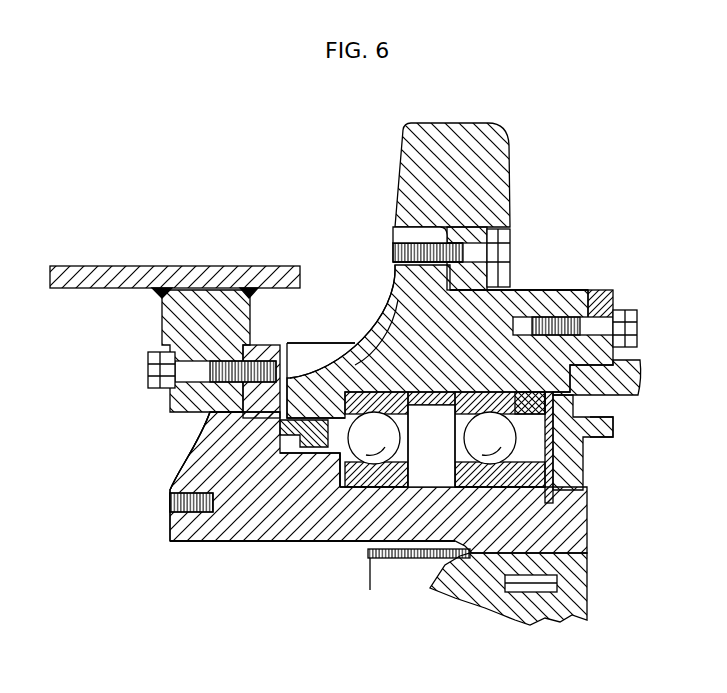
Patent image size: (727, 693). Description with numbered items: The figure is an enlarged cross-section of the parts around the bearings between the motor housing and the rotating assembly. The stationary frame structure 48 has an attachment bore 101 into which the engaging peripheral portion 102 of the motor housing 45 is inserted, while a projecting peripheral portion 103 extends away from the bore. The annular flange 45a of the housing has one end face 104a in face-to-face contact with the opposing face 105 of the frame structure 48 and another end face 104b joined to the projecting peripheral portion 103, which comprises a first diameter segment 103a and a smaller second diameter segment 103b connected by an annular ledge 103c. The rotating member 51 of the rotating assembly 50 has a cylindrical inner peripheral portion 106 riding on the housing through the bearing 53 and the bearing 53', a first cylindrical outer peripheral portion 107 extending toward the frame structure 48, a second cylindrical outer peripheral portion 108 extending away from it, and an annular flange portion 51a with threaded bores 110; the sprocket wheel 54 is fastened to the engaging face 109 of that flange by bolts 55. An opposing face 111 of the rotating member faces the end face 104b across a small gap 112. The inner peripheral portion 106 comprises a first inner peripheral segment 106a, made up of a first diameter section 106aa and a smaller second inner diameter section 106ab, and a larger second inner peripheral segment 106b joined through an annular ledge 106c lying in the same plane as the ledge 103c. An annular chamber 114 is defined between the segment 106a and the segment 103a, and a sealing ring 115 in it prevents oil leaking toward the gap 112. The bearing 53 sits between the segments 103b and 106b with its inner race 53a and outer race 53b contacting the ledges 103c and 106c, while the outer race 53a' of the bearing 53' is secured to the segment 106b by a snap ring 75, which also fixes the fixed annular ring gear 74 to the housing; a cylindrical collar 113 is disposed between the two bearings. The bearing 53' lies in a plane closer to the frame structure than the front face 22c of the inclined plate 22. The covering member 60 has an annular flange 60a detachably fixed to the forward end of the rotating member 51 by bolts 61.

The inclined plate 22 is at (523, 612).
The front face of inclined plate 22c is at (535, 554).
The motor housing 45 is at (177, 483).
The annular flange 45a is at (262, 345).
The stationary frame structure 48 is at (168, 303).
The rotating assembly 50 is at (581, 235).
The rotating member 51 is at (397, 270).
The annular flange portion 51a is at (399, 231).
The bearing 53 is at (432, 446).
The inner race 53a is at (376, 418).
The outer race 53a' is at (545, 385).
The outer race 53b is at (431, 446).
The bearing 53' is at (532, 463).
The sprocket wheel 54 is at (503, 133).
The bolts 55 is at (506, 250).
The covering member 60 is at (630, 378).
The annular flange 60a is at (598, 293).
The bolts 61 is at (636, 330).
The fixed annular ring gear 74 is at (608, 438).
The snap ring 75 is at (613, 424).
The attachment bore 101 is at (170, 430).
The engaging peripheral portion 102 is at (231, 404).
The projecting peripheral portion 103 is at (433, 487).
The first diameter segment 103a is at (313, 455).
The second diameter segment 103b is at (521, 489).
The annular ledge 103c is at (367, 488).
The one end face 104a is at (228, 390).
The other end face 104b is at (172, 490).
The opposing face 105 is at (242, 343).
The cylindrical inner peripheral portion 106 is at (398, 385).
The first inner peripheral segment 106a is at (285, 381).
The first diameter section 106aa is at (286, 438).
The second inner diameter section 106ab is at (342, 487).
The second inner peripheral segment 106b is at (468, 391).
The annular ledge 106c is at (385, 322).
The first cylindrical outer peripheral portion 107 is at (346, 308).
The second cylindrical outer peripheral portion 108 is at (549, 290).
The engaging face 109 is at (454, 286).
The threaded bores 110 is at (446, 252).
The opposing face 111 is at (326, 343).
The gap 112 is at (290, 352).
The cylindrical collar 113 is at (432, 392).
The annular chamber 114 is at (300, 515).
The sealing ring 115 is at (312, 513).